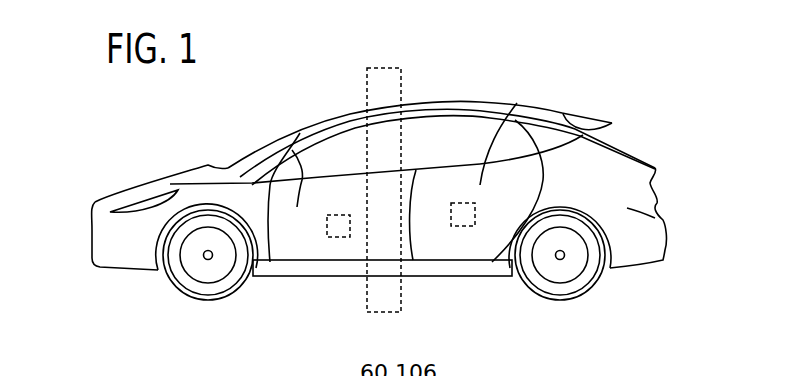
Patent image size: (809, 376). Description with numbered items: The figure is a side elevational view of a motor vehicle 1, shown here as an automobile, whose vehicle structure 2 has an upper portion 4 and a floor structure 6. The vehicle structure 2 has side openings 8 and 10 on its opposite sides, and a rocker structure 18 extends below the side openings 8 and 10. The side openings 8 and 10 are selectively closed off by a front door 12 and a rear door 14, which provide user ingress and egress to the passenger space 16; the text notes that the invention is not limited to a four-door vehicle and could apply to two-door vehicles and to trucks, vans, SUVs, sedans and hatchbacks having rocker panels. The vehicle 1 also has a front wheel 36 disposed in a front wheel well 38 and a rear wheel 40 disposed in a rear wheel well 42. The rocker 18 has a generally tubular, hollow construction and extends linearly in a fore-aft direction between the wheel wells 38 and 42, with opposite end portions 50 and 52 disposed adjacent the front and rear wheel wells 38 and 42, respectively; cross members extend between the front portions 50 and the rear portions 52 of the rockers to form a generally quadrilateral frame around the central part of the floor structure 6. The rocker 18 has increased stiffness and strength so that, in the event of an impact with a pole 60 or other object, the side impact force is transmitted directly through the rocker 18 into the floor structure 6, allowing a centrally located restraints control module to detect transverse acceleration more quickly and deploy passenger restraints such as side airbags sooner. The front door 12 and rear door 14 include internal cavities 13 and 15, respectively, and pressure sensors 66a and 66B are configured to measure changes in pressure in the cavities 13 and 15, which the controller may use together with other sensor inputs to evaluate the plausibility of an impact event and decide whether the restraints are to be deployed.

The motor vehicle 1 is at (600, 105).
The vehicle structure 2 is at (655, 180).
The upper portion 4 is at (475, 103).
The floor structure 6 is at (473, 277).
The side opening 8 is at (328, 150).
The side opening 10 is at (447, 138).
The front door 12 is at (307, 247).
The internal cavity 13 is at (283, 137).
The rear door 14 is at (448, 248).
The internal cavity 15 is at (517, 103).
The passenger space 16 is at (353, 145).
The rocker structure 18 is at (345, 268).
The front wheel 36 is at (202, 280).
The front wheel well 38 is at (170, 268).
The rear wheel 40 is at (575, 283).
The rear wheel well 42 is at (603, 272).
The front end portion 50 is at (263, 272).
The rear end portion 52 is at (516, 275).
The pole 60 is at (390, 67).
The pressure sensor 66a is at (328, 240).
The pressure sensor 66B is at (463, 226).